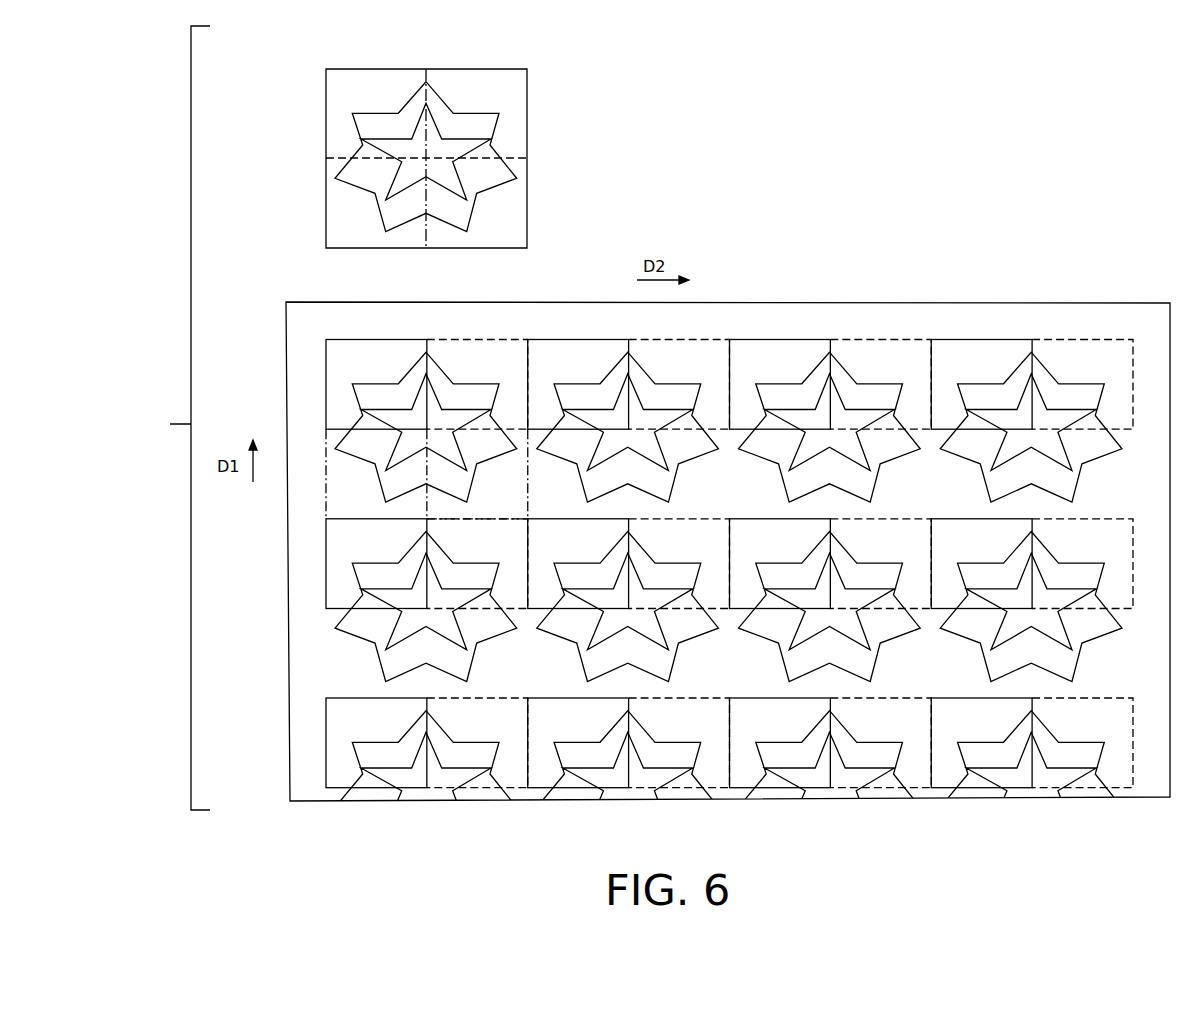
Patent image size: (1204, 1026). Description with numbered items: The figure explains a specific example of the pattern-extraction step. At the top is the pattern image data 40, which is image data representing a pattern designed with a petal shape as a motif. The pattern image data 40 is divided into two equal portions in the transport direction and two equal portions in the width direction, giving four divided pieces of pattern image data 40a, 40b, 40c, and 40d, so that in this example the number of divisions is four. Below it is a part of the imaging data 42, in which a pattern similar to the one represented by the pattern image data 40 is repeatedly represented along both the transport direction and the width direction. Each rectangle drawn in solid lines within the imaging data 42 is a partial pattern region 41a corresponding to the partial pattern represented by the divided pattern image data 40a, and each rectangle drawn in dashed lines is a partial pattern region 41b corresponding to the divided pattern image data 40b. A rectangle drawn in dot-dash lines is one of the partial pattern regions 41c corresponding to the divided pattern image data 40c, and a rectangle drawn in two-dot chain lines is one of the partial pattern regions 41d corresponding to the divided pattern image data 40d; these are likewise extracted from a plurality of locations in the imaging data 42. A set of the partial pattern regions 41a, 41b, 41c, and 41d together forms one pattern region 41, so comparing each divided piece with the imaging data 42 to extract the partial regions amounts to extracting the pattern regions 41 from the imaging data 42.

The pattern image data 40 is at (306, 91).
The divided pattern image data 40a is at (368, 75).
The divided pattern image data 40b is at (478, 77).
The divided pattern image data 40c is at (345, 197).
The divided pattern image data 40d is at (517, 207).
The pattern region 41 is at (352, 328).
The partial pattern region 41a is at (381, 353).
The partial pattern region 41b is at (501, 348).
The partial pattern region 41c is at (332, 495).
The partial pattern region 41d is at (488, 435).
The imaging data 42 is at (1047, 313).